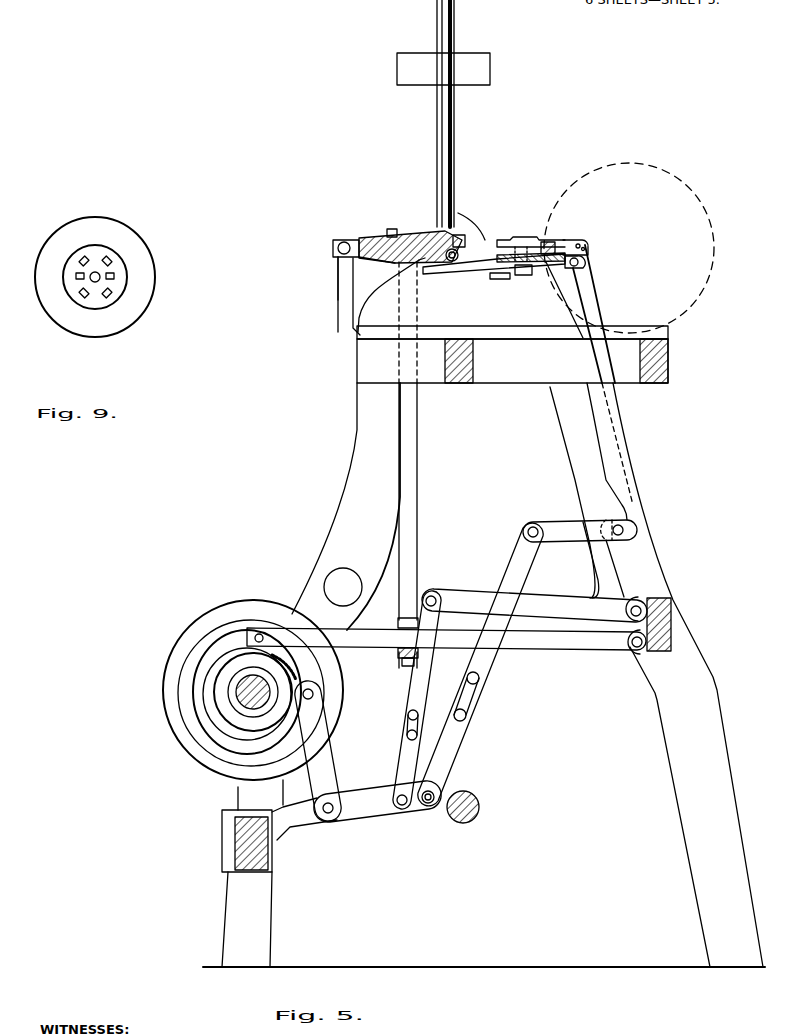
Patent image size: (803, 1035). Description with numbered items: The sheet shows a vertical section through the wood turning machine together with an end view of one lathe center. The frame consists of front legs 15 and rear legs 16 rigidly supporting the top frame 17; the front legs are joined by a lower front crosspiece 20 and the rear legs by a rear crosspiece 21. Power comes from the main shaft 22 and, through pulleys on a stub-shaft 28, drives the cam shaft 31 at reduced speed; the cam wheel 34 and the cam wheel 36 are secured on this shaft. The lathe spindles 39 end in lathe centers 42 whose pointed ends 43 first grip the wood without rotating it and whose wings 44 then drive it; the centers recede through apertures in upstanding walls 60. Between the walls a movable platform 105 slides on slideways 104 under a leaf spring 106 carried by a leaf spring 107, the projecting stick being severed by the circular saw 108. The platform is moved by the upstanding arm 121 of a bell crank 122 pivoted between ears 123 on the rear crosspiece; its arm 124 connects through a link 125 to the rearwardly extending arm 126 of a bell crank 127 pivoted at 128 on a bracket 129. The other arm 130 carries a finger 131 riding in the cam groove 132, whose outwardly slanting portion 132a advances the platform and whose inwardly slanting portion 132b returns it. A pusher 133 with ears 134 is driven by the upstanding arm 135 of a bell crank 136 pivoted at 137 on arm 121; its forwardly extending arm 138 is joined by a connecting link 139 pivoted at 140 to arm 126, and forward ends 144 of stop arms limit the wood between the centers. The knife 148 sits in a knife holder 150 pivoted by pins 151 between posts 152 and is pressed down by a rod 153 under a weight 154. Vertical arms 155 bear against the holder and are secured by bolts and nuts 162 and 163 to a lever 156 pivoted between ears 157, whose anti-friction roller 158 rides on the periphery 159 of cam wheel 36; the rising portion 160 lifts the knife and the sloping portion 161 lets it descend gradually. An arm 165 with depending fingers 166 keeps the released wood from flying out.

In FIG. 5, the front legs 15 is at (402, 612).
In FIG. 5, the rear legs 16 is at (656, 675).
In FIG. 5, the top frame 17 is at (474, 360).
In FIG. 5, the lower front crosspiece 20 is at (246, 872).
In FIG. 5, the rear crosspiece 21 is at (672, 620).
In FIG. 5, the main shaft 22 is at (480, 804).
In FIG. 5, the stub-shaft 28 is at (336, 575).
In FIG. 5, the cam shaft 31 is at (232, 692).
In FIG. 5, the cam wheel 34 is at (168, 726).
In FIG. 5, the cam wheel 36 is at (216, 676).
In FIG. 9, the lathe spindles 39 is at (100, 220).
In FIG. 9, the lathe centers 42 is at (73, 252).
In FIG. 5, the lathe centers 42 is at (449, 263).
In FIG. 9, the pointed ends 43 is at (99, 280).
In FIG. 9, the wings 44 is at (91, 262).
In FIG. 5, the upstanding walls 60 is at (459, 291).
In FIG. 5, the slideways 104 is at (462, 275).
In FIG. 5, the movable platform 105 is at (522, 276).
In FIG. 5, the leaf spring 106 is at (548, 242).
In FIG. 5, the leaf spring 107 is at (515, 237).
In FIG. 5, the circular saw 108 is at (680, 176).
In FIG. 5, the upstanding arm 121 is at (580, 284).
In FIG. 5, the bell crank 122 is at (632, 588).
In FIG. 5, the ears 123 is at (645, 600).
In FIG. 5, the arm 124 is at (458, 597).
In FIG. 5, the link 125 is at (424, 675).
In FIG. 5, the rearwardly extending arm 126 is at (396, 808).
In FIG. 5, the bell crank 127 is at (362, 822).
In FIG. 5, the pivot 128 is at (328, 814).
In FIG. 5, the bracket 129 is at (304, 819).
In FIG. 5, the upwardly extending arm 130 is at (318, 751).
In FIG. 5, the finger 131 is at (318, 694).
In FIG. 5, the cam groove 132 is at (200, 728).
In FIG. 5, the outwardly slanting portion 132a is at (232, 755).
In FIG. 5, the inwardly slanting portion 132b is at (330, 742).
In FIG. 5, the pusher 133 is at (577, 227).
In FIG. 5, the ears 134 is at (570, 241).
In FIG. 5, the upstanding arm 135 is at (600, 305).
In FIG. 5, the bell crank 136 is at (630, 505).
In FIG. 5, the pivot 137 is at (624, 530).
In FIG. 5, the forwardly extending arm 138 is at (540, 522).
In FIG. 5, the connecting link 139 is at (490, 662).
In FIG. 5, the pivot 140 is at (432, 806).
In FIG. 5, the forward ends 144 is at (500, 279).
In FIG. 5, the knife 148 is at (380, 236).
In FIG. 5, the knife holder 150 is at (372, 263).
In FIG. 5, the pins 151 is at (333, 243).
In FIG. 5, the posts 152 is at (339, 283).
In FIG. 5, the vertically movable rod 153 is at (455, 134).
In FIG. 5, the weight 154 is at (490, 72).
In FIG. 5, the vertical arms 155 is at (418, 417).
In FIG. 5, the lever 156 is at (565, 640).
In FIG. 5, the ears 157 is at (645, 652).
In FIG. 5, the anti-friction roller 158 is at (260, 628).
In FIG. 5, the periphery 159 is at (236, 640).
In FIG. 5, the rising portion 160 is at (256, 730).
In FIG. 5, the sloping portion 161 is at (280, 667).
In FIG. 5, the bolts and nuts 162 is at (405, 618).
In FIG. 5, the bolts and nuts 163 is at (402, 668).
In FIG. 5, the arm 165 is at (467, 212).
In FIG. 5, the depending fingers 166 is at (462, 234).